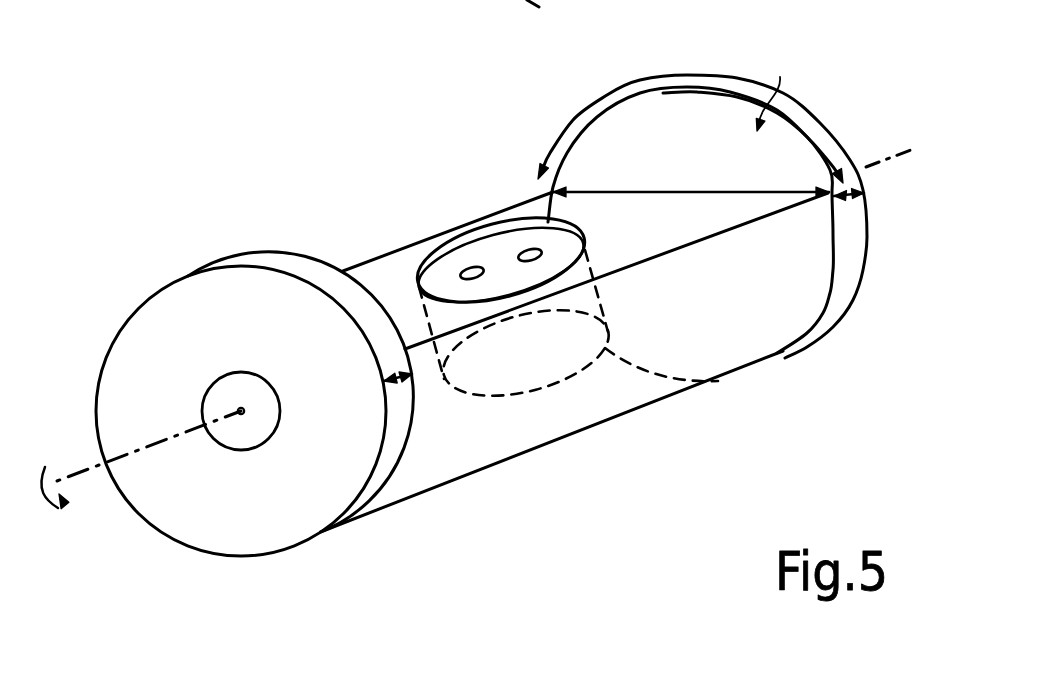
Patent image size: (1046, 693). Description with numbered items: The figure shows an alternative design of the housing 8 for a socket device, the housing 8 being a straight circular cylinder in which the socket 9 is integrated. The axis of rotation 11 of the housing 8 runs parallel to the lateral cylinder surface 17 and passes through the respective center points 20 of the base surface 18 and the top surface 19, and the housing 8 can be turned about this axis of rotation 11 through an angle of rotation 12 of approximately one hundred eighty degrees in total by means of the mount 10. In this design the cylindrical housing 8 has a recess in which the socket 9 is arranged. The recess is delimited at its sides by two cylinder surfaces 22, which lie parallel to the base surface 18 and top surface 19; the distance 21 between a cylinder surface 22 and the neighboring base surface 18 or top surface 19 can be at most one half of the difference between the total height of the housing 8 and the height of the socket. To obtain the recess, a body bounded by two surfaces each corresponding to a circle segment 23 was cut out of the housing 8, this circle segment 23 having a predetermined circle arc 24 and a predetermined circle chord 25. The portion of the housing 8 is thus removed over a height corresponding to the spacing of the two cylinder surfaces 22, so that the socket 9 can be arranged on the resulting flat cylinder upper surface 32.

The housing 8 is at (572, 497).
The socket 9 is at (495, 253).
The mount 10 is at (250, 432).
The axis of rotation 11 is at (176, 434).
The angle of rotation 12 is at (52, 510).
The lateral cylinder surface 17 is at (572, 414).
The base surface 18 is at (185, 302).
The top surface 19 is at (868, 204).
The center point 20 is at (247, 409).
The distance 21 is at (413, 388).
The cylinder surface 22 is at (773, 88).
The circle segment 23 is at (710, 130).
The circle arc 24 is at (677, 72).
The circle chord 25 is at (713, 196).
The flat cylinder upper surface 32 is at (385, 275).